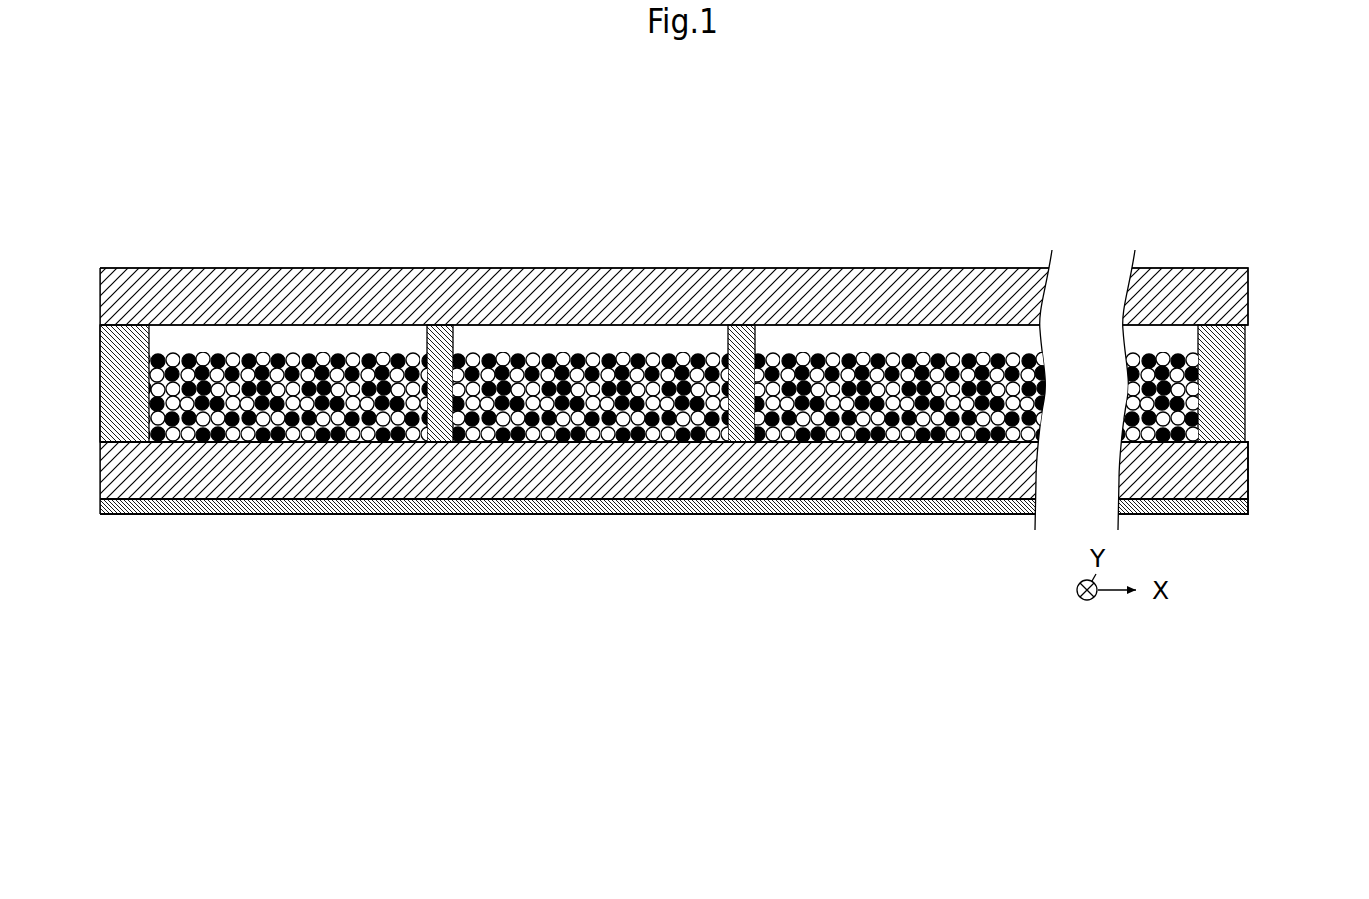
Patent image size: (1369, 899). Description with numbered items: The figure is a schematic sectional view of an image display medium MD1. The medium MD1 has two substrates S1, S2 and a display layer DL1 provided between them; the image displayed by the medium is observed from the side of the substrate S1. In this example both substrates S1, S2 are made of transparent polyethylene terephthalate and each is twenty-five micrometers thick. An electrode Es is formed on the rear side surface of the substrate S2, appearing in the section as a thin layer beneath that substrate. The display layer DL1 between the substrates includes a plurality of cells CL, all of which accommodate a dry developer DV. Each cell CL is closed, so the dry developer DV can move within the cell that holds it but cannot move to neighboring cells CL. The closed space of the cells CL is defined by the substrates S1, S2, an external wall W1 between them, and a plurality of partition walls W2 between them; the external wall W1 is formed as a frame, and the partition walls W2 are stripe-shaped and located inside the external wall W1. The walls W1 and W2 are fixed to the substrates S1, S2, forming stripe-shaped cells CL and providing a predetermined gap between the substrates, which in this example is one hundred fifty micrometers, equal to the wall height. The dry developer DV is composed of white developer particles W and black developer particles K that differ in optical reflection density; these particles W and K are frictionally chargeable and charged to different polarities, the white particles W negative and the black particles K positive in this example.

The image display medium MD1 is at (151, 208).
The cell CL is at (283, 338).
The substrate S1 is at (1240, 297).
The substrate S2 is at (1240, 475).
The electrode Es is at (1247, 508).
The display layer DL1 is at (1256, 379).
The external wall W1 is at (125, 435).
The partition wall W2 is at (440, 442).
The white developer particles W is at (200, 440).
The black developer particles K is at (292, 440).
The dry developer DV is at (328, 558).